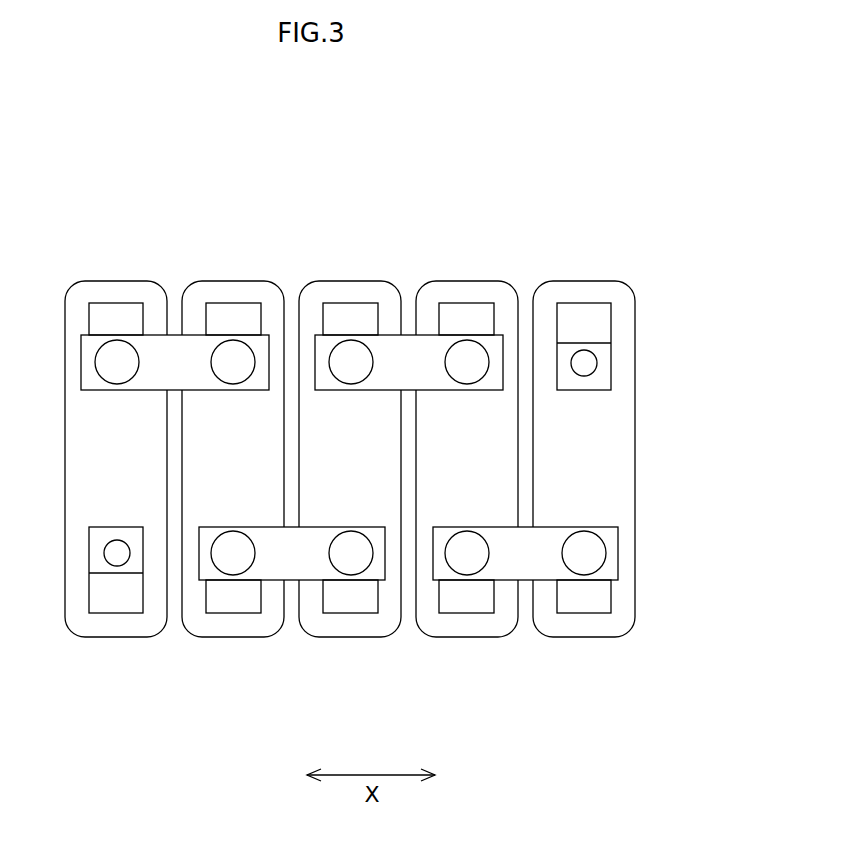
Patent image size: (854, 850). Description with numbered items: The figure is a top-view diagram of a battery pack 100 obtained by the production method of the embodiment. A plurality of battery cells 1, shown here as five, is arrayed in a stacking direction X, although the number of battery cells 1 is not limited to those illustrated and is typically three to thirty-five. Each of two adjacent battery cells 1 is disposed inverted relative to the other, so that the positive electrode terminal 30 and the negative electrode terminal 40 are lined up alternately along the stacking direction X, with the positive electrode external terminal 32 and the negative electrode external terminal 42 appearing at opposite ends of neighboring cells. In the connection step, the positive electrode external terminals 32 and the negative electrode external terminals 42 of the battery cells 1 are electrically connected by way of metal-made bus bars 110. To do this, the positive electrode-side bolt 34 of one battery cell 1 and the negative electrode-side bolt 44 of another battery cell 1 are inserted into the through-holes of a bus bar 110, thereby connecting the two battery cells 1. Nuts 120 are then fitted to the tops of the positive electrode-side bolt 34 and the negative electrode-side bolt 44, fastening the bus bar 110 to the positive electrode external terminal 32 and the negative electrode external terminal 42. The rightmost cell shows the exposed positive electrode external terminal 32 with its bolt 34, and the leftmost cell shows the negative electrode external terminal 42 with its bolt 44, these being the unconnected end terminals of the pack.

The battery pack 100 is at (673, 171).
The battery cell 1 is at (138, 281).
The bus bar 110 is at (175, 345).
The nut 120 is at (117, 350).
The positive electrode terminal 30 is at (493, 641).
The positive electrode external terminal 32 is at (568, 312).
The positive electrode-side bolt 34 is at (586, 353).
The negative electrode terminal 40 is at (623, 648).
The negative electrode external terminal 42 is at (132, 605).
The negative electrode-side bolt 44 is at (112, 562).